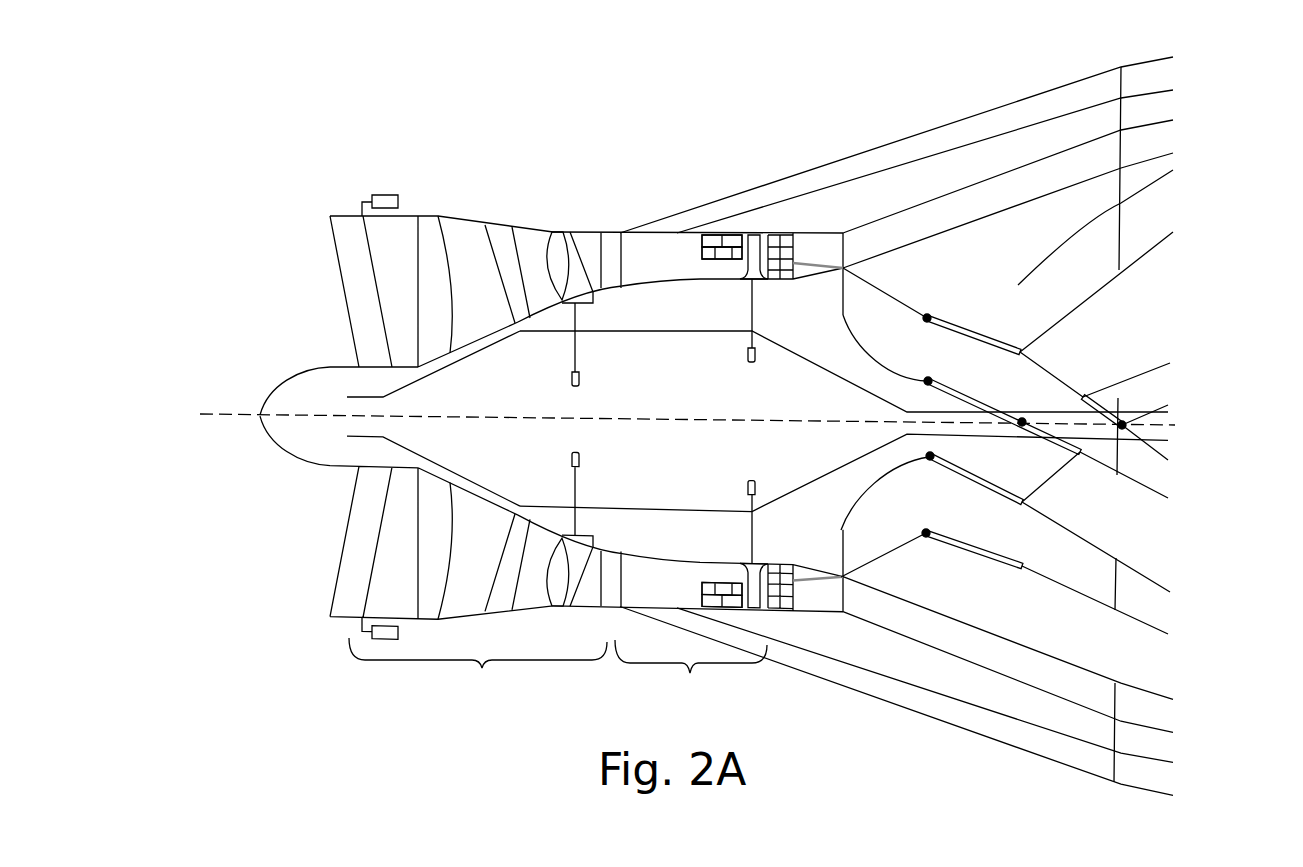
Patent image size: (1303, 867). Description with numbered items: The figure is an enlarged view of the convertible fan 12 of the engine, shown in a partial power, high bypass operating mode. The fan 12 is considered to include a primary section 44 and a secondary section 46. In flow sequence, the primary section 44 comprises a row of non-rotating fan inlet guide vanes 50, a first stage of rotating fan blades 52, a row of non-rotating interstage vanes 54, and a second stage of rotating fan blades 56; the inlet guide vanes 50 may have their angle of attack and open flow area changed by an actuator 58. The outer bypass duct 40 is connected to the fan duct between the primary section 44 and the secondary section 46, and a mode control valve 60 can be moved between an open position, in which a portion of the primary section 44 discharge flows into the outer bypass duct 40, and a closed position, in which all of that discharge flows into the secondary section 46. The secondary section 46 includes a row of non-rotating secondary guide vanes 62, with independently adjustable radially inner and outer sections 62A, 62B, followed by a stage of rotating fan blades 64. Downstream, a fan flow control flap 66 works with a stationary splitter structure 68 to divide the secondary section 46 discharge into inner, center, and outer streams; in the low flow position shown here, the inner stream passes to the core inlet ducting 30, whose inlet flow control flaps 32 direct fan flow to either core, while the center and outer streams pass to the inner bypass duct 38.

The fan 12 is at (583, 140).
The core inlet ducting 30 is at (1133, 233).
The inlet flow control flaps 32 is at (1098, 415).
The inner bypass duct 38 is at (1137, 145).
The outer bypass duct 40 is at (1017, 105).
The primary section 44 is at (478, 670).
The secondary section 46 is at (691, 672).
The fan inlet guide vanes 50 is at (333, 257).
The first stage of rotating fan blades 52 is at (457, 232).
The interstage vanes 54 is at (527, 240).
The second stage of rotating fan blades 56 is at (573, 237).
The actuator 58 is at (389, 195).
The mode control valve 60 is at (643, 235).
The secondary guide vanes 62 is at (712, 283).
The inner section of secondary guide vanes 62A is at (705, 255).
The outer section of secondary guide vanes 62B is at (723, 240).
The rotating fan blades 64 is at (773, 257).
The fan flow control flap 66 is at (795, 262).
The stationary splitter structure 68 is at (823, 262).